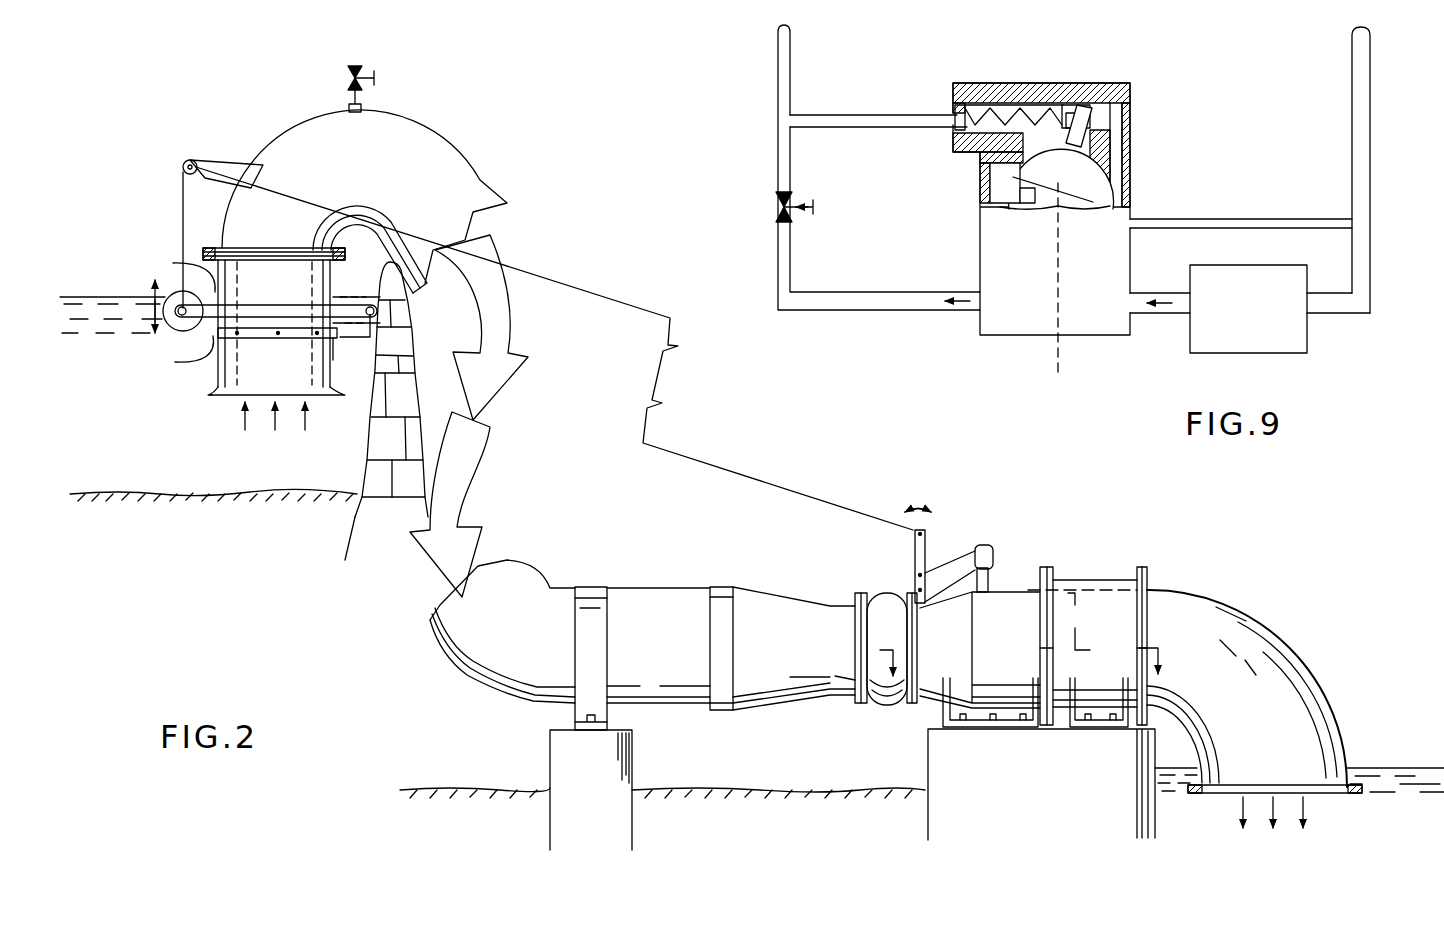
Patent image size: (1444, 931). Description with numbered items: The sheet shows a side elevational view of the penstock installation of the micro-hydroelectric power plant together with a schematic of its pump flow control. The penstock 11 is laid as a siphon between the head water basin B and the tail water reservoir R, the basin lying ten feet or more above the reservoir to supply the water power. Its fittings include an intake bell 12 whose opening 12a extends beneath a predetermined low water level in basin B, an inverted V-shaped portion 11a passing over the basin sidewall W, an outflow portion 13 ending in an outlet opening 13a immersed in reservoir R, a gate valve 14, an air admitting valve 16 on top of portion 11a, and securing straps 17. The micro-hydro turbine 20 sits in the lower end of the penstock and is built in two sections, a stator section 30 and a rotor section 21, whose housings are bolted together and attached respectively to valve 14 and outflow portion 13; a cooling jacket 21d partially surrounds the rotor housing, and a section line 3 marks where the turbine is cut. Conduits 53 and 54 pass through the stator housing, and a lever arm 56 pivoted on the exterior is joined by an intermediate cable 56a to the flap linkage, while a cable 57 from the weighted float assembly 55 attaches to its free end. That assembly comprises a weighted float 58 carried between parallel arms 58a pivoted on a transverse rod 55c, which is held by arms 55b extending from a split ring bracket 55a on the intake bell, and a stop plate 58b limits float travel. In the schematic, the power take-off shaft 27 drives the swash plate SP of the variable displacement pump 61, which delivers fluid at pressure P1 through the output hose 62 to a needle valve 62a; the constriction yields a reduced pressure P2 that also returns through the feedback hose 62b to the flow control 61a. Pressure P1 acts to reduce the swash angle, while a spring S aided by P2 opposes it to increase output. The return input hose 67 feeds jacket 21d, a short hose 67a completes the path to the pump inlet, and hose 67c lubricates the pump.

In FIG. 2, the penstock 11 is at (660, 588).
In FIG. 2, the inverted V-shaped portion 11a is at (395, 130).
In FIG. 2, the intake bell 12 is at (275, 148).
In FIG. 2, the opening 12a is at (228, 396).
In FIG. 2, the outflow portion 13 is at (1198, 598).
In FIG. 2, the outlet opening 13a is at (1323, 796).
In FIG. 2, the gate valve 14 is at (858, 592).
In FIG. 2, the air admitting valve 16 is at (355, 66).
In FIG. 2, the securing straps 17 is at (590, 588).
In FIG. 2, the micro-hydro turbine 20 is at (1045, 742).
In FIG. 2, the rotor section 21 is at (1077, 572).
In FIG. 2, the jacket 21d is at (1113, 580).
In FIG. 9, the jacket 21d is at (1237, 339).
In FIG. 9, the power take-off shaft 27 is at (1060, 362).
In FIG. 2, the section line 3 is at (1022, 663).
In FIG. 2, the stator section 30 is at (927, 704).
In FIG. 2, the conduit 53 is at (990, 568).
In FIG. 2, the conduit 54 is at (985, 546).
In FIG. 2, the weighted float assembly 55 is at (233, 302).
In FIG. 2, the split ring bracket 55a is at (276, 380).
In FIG. 2, the arms 55b is at (344, 340).
In FIG. 2, the transverse rod 55c is at (371, 306).
In FIG. 2, the lever arm 56 is at (914, 553).
In FIG. 2, the intermediate cable 56a is at (950, 568).
In FIG. 2, the cable 57 is at (183, 191).
In FIG. 2, the weighted float 58 is at (175, 330).
In FIG. 2, the supporting parallel arms 58a is at (250, 340).
In FIG. 2, the stop plate 58b is at (178, 263).
In FIG. 9, the variable displacement pump 61 is at (1133, 182).
In FIG. 9, the flow control 61a is at (1020, 82).
In FIG. 9, the output hose 62 is at (792, 55).
In FIG. 9, the needle valve 62a is at (774, 207).
In FIG. 9, the feedback hose 62b is at (885, 115).
In FIG. 9, the input hose 67 is at (1371, 202).
In FIG. 9, the short hose 67a is at (1155, 290).
In FIG. 9, the short hose 67c is at (1274, 216).
In FIG. 2, the head water basin B is at (92, 300).
In FIG. 2, the basin sidewall W is at (412, 372).
In FIG. 2, the tail water reservoir R is at (1420, 770).
In FIG. 9, the spring S is at (1040, 108).
In FIG. 9, the swash plate SP is at (1013, 177).
In FIG. 9, the output pressure P1 is at (1117, 110).
In FIG. 9, the reduced output pressure P2 is at (778, 80).